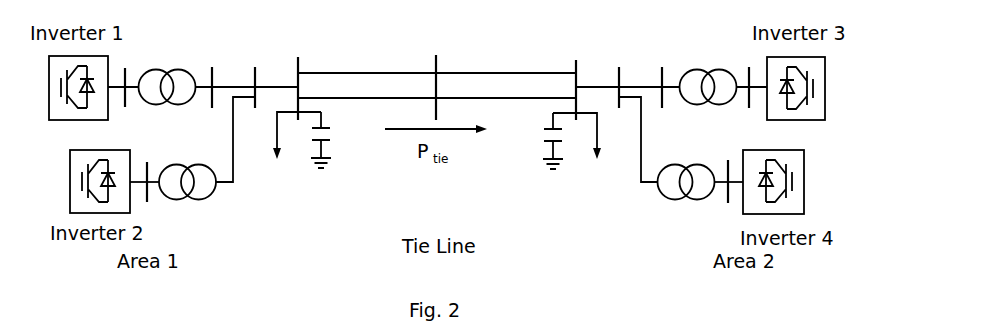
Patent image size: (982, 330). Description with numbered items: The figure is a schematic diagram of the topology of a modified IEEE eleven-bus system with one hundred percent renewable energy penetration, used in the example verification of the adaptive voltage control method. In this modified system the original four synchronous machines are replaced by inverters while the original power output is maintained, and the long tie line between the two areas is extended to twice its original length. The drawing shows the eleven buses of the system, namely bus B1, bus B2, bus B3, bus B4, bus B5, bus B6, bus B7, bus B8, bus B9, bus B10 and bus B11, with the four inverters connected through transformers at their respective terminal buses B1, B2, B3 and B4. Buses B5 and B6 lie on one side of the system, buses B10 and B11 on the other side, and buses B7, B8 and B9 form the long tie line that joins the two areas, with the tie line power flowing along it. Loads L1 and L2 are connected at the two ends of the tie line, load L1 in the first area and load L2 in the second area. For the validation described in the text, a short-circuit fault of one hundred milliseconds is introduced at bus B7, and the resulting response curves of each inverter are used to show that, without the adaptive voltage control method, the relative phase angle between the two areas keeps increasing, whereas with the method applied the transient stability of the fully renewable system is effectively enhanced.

The bus B1 (inverter 1 terminal bus) B1 is at (130, 74).
The bus B2 (inverter 2 terminal bus) B2 is at (155, 199).
The bus B3 (inverter 3 terminal bus) B3 is at (744, 76).
The bus B4 (inverter 4 terminal bus) B4 is at (729, 196).
The bus B5 is at (207, 75).
The bus B6 is at (250, 75).
The bus 7 B7 is at (292, 75).
The bus B8 (tie line midpoint bus) B8 is at (435, 75).
The bus B9 (tie line receiving end bus) B9 is at (580, 79).
The bus B10 is at (625, 76).
The bus B11 is at (675, 76).
The load L1 in area 1 L1 is at (289, 148).
The load L2 in area 2 L2 is at (584, 148).